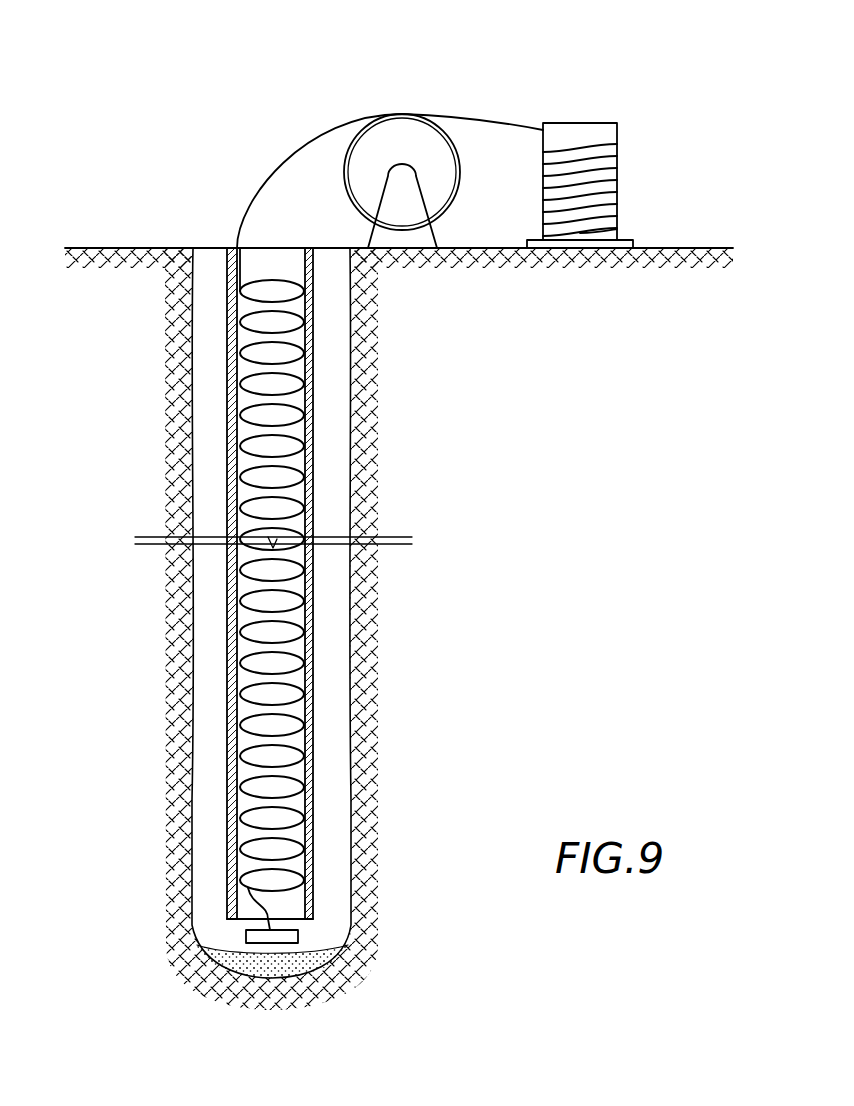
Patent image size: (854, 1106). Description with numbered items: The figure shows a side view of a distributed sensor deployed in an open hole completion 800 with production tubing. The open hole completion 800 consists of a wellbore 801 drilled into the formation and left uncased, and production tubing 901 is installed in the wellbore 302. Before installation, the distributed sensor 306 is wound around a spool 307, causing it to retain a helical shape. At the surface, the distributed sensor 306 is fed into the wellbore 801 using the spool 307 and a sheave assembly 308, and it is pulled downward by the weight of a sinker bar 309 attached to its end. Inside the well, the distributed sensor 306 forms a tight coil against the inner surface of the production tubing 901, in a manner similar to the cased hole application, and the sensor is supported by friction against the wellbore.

The open hole completion 800 is at (160, 176).
The distributed sensor 306 is at (306, 150).
The spool 307 is at (585, 130).
The sheave assembly 308 is at (402, 132).
The production tubing 901 is at (306, 388).
The wellbore 801 is at (397, 613).
The wellbore 302 is at (457, 691).
The sinker bar 309 is at (298, 931).